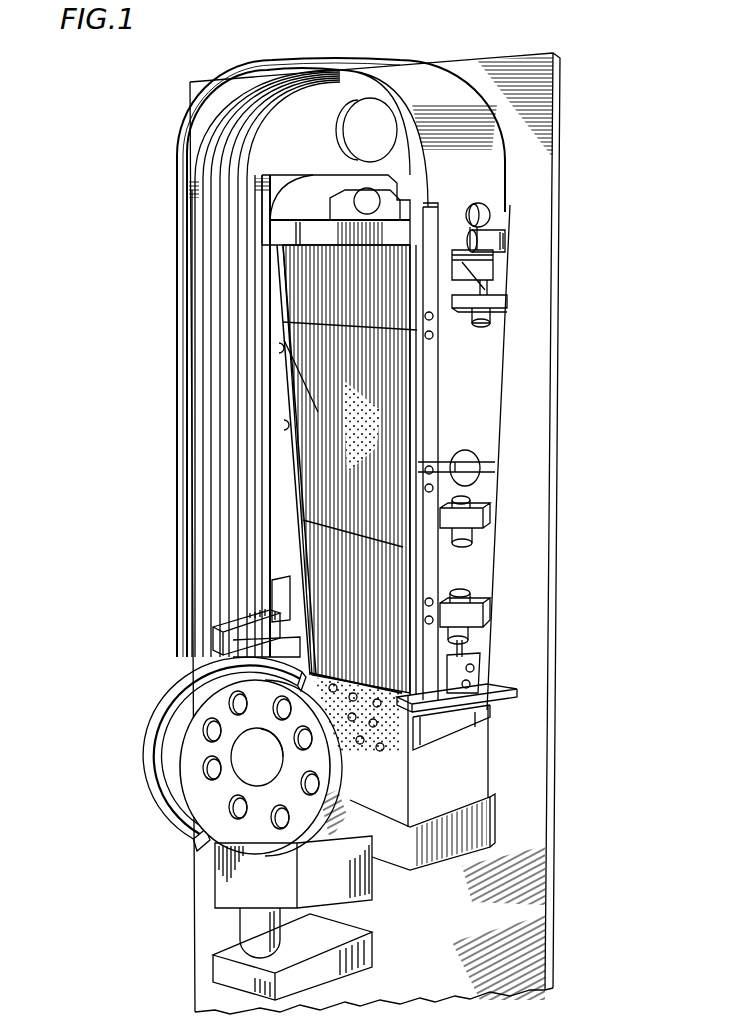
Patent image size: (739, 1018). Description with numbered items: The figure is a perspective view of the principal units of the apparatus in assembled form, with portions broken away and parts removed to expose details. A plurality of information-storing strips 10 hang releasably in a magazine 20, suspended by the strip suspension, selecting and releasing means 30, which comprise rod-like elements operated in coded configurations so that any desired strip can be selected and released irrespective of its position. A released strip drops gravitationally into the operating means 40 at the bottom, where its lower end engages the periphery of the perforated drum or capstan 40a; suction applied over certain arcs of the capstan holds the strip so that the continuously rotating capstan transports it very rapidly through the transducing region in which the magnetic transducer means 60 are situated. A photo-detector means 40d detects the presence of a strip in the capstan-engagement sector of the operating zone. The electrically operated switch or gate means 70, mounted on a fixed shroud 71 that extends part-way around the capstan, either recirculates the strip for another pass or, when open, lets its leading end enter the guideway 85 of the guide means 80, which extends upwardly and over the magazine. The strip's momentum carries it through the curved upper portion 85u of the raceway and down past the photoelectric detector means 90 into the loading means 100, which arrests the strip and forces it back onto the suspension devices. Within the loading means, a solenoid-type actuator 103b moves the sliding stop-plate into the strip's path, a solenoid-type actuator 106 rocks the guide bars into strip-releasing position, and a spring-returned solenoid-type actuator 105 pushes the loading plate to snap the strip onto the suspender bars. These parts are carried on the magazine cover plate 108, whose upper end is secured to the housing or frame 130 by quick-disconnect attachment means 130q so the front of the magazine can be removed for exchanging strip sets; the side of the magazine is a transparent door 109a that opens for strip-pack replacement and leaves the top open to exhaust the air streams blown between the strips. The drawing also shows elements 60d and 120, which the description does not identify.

The information-storing strips 10 is at (372, 423).
The magazine 20 is at (408, 585).
The strip suspension, selecting and releasing means 30 is at (400, 217).
The operating means 40 is at (153, 830).
The perforated drum or capstan 40a is at (362, 727).
The photo-detector means 40d is at (453, 827).
The magnetic transducer means 60 is at (236, 875).
The support peg 60d is at (250, 935).
The switch or gate means 70 is at (168, 667).
The fixed shroud 71 is at (163, 702).
The guide means 80 is at (230, 216).
The guideway (raceway) 85 is at (183, 268).
The upper portion of the guideway 85u is at (227, 123).
The photoelectric detector means 90 is at (490, 233).
The loading means 100 is at (478, 350).
The solenoid-type actuator 103b is at (470, 597).
The spring-returned solenoid-type actuator 105 is at (500, 317).
The solenoid-type actuator 106 is at (470, 530).
The magazine cover plate 108 is at (483, 360).
The transparent door 109a is at (290, 343).
The back panel 120 is at (520, 878).
The housing or frame 130 is at (445, 757).
The quick-disconnect attachment means 130q is at (485, 205).